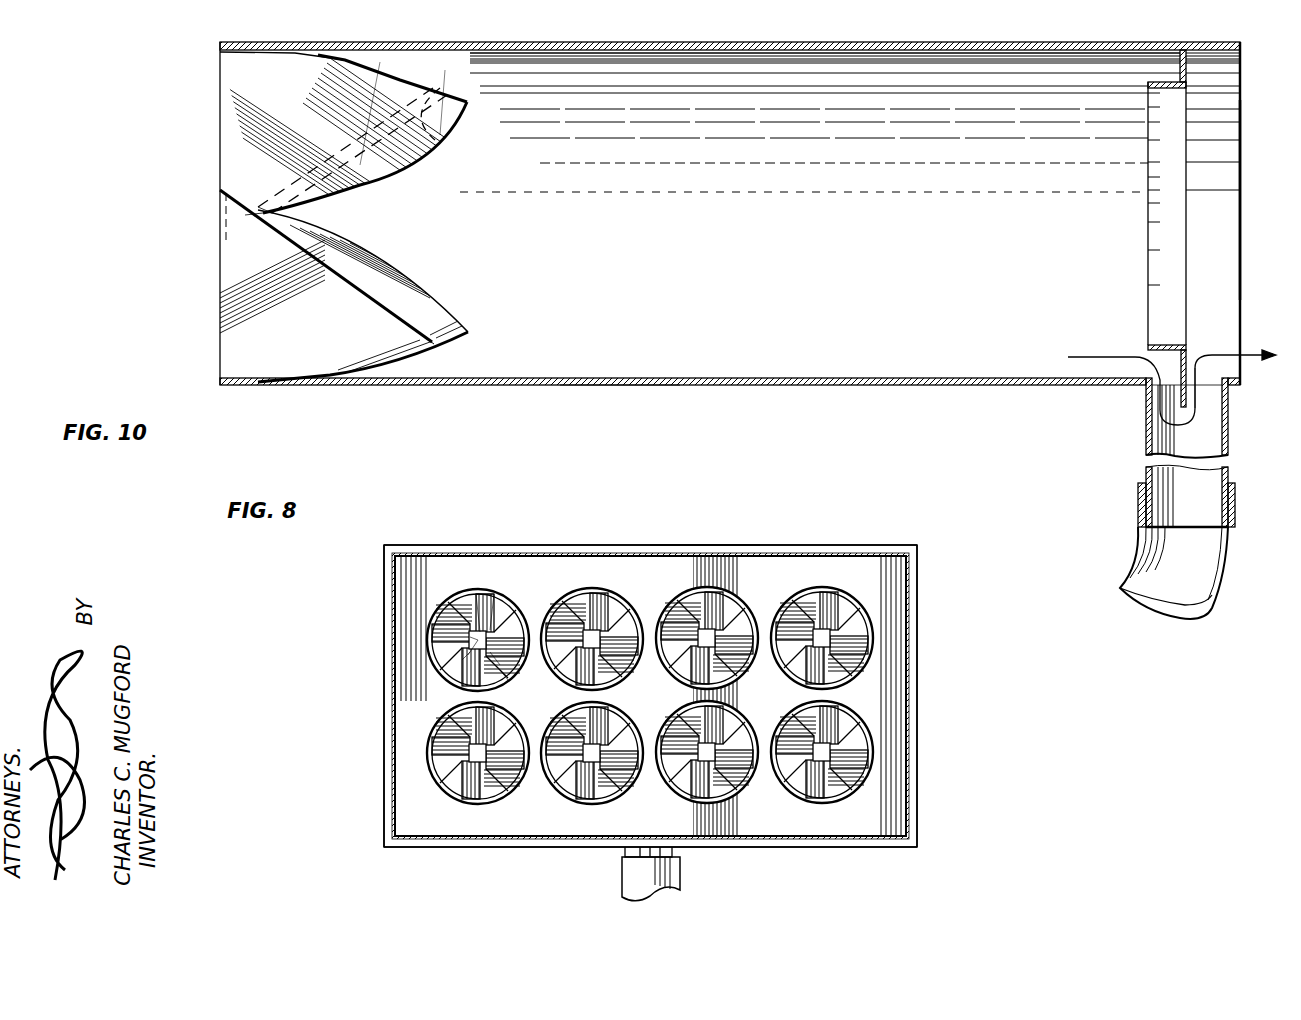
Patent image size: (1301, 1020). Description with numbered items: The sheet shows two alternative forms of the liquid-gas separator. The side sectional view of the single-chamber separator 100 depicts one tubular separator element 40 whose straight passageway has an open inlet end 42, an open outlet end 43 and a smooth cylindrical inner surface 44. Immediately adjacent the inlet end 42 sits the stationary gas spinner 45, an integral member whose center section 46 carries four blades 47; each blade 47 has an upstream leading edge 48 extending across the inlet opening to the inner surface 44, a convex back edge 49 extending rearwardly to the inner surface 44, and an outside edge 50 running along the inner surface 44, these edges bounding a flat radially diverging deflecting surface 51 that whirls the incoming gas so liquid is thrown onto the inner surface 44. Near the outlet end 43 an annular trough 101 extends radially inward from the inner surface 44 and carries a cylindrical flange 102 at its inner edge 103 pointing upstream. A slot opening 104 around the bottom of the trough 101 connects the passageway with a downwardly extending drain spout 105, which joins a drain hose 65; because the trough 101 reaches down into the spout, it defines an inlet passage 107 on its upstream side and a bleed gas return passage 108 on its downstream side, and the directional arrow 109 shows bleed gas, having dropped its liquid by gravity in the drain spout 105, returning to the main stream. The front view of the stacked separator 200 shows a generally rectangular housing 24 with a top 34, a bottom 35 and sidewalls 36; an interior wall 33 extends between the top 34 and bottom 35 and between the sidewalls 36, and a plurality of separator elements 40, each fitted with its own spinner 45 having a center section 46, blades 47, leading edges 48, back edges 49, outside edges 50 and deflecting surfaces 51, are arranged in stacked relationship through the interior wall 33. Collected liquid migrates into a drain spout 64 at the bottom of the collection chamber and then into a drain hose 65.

In FIG. 8, the housing 24 is at (540, 545).
In FIG. 8, the interior wall 33 is at (384, 752).
In FIG. 8, the top 34 is at (702, 545).
In FIG. 8, the bottom 35 is at (470, 847).
In FIG. 8, the sidewalls 36 is at (384, 612).
In FIG. 8, the tubular separator element 40 is at (745, 592).
In FIG. 10, the inlet end 42 is at (220, 95).
In FIG. 8, the inlet end 42 is at (476, 610).
In FIG. 10, the outlet end 43 is at (1240, 230).
In FIG. 10, the inner surface 44 is at (758, 50).
In FIG. 10, the gas spinner 45 is at (212, 278).
In FIG. 8, the gas spinner 45 is at (468, 655).
In FIG. 10, the center section 46 is at (238, 215).
In FIG. 8, the center section 46 is at (470, 637).
In FIG. 10, the blade 47 is at (380, 62).
In FIG. 8, the blade 47 is at (508, 680).
In FIG. 10, the leading edge 48 is at (220, 63).
In FIG. 8, the leading edge 48 is at (490, 630).
In FIG. 10, the back edge 49 is at (428, 138).
In FIG. 8, the back edge 49 is at (462, 660).
In FIG. 10, the outside edge 50 is at (355, 290).
In FIG. 8, the outside edge 50 is at (500, 665).
In FIG. 10, the deflecting surface 51 is at (255, 130).
In FIG. 8, the deflecting surface 51 is at (493, 605).
In FIG. 8, the drain spout 64 is at (680, 852).
In FIG. 10, the drain hose 65 is at (1205, 605).
In FIG. 8, the drain hose 65 is at (682, 876).
In FIG. 10, the single-chamber separator 100 is at (620, 385).
In FIG. 10, the annular trough 101 is at (1186, 175).
In FIG. 10, the cylindrical flange 102 is at (1170, 345).
In FIG. 10, the inner edge 103 is at (1186, 88).
In FIG. 10, the slot opening 104 is at (1195, 370).
In FIG. 10, the drain spout 105 is at (1228, 432).
In FIG. 10, the inlet passage 107 is at (1160, 420).
In FIG. 10, the bleed gas return passage 108 is at (1215, 390).
In FIG. 10, the directional arrow 109 is at (1090, 357).
In FIG. 8, the stacked separator 200 is at (652, 540).